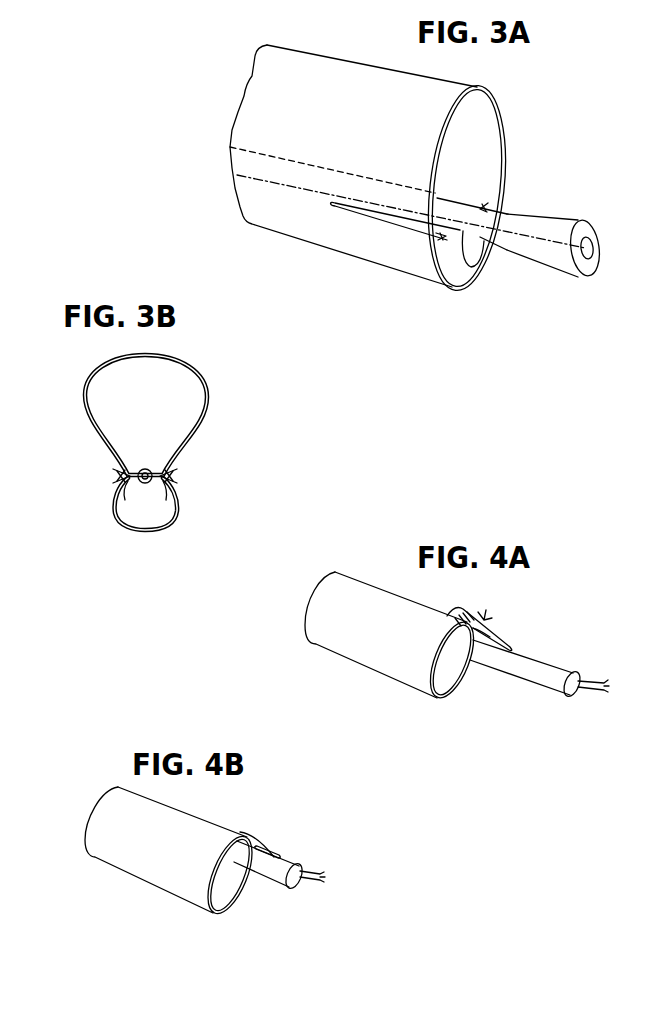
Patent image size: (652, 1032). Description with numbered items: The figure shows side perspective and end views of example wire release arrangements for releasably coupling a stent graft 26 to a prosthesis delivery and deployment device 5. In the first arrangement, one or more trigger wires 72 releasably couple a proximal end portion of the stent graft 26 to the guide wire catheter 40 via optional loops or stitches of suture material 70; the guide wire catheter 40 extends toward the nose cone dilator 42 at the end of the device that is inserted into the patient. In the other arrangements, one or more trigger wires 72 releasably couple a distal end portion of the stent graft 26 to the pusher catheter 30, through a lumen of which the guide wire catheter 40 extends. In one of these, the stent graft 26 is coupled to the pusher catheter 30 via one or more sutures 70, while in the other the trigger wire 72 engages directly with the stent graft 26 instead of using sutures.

In FIG. 4A, the electrical connector assembly 5 is at (422, 612).
In FIG. 3A, the stent graft 26 is at (260, 70).
In FIG. 3B, the stent graft 26 is at (202, 425).
In FIG. 4A, the stent graft 26 is at (338, 647).
In FIG. 4B, the stent graft 26 is at (138, 865).
In FIG. 4A, the pusher catheter 30 is at (553, 657).
In FIG. 4B, the pusher catheter 30 is at (297, 852).
In FIG. 3A, the guide wire catheter 40 is at (498, 213).
In FIG. 3B, the guide wire catheter 40 is at (146, 488).
In FIG. 4A, the guide wire catheter 40 is at (588, 697).
In FIG. 4B, the guide wire catheter 40 is at (305, 886).
In FIG. 3A, the nose cone dilator 42 is at (572, 221).
In FIG. 3A, the sutures 70 is at (452, 262).
In FIG. 3B, the sutures 70 is at (120, 475).
In FIG. 4A, the sutures 70 is at (487, 627).
In FIG. 3A, the trigger wires 72 is at (488, 268).
In FIG. 3B, the trigger wires 72 is at (117, 507).
In FIG. 4A, the trigger wires 72 is at (503, 645).
In FIG. 4B, the trigger wires 72 is at (267, 841).